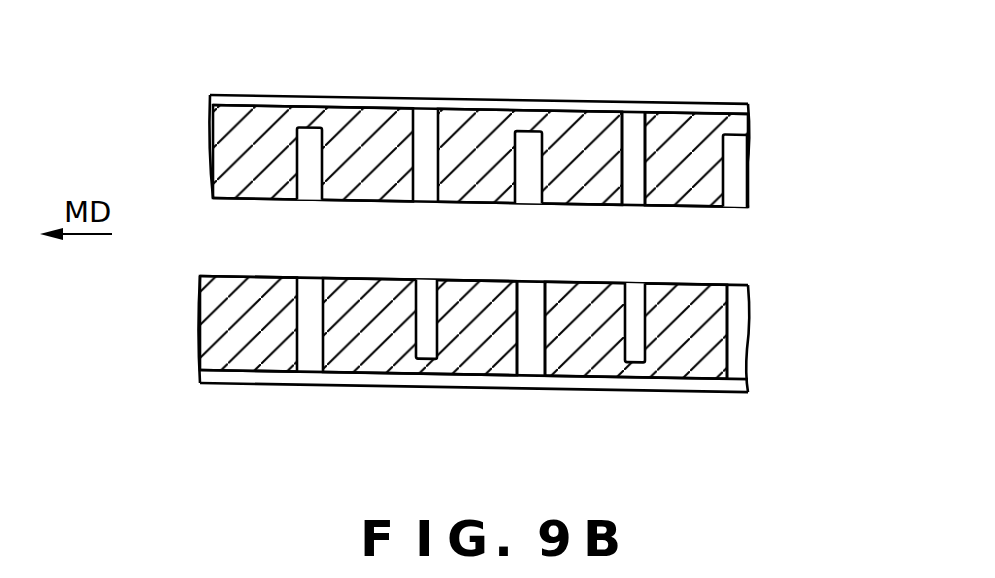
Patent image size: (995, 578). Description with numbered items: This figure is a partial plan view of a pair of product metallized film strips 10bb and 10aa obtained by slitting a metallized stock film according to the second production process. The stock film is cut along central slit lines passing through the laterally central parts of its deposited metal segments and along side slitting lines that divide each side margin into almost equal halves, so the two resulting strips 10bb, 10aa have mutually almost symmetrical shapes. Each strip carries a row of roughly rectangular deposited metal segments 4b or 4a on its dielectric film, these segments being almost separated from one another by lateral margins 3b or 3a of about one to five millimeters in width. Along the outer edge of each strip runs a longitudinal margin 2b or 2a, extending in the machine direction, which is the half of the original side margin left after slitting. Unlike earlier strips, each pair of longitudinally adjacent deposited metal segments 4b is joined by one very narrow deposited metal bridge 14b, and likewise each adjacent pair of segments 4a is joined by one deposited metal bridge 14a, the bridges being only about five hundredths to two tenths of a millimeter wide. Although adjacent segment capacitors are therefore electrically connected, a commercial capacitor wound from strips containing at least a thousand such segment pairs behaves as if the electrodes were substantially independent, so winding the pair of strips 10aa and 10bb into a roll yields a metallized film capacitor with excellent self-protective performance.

The metallized film strip 10bb is at (537, 116).
The metallized film strip 10aa is at (531, 345).
The longitudinal margin 2b is at (476, 103).
The longitudinal margin 2a is at (700, 386).
The lateral margin 3b is at (632, 128).
The lateral margin 3a is at (635, 300).
The deposited metal segment 4b is at (493, 175).
The deposited metal segment 4a is at (390, 345).
The deposited metal bridge 14b is at (308, 118).
The deposited metal bridge 14a is at (426, 362).